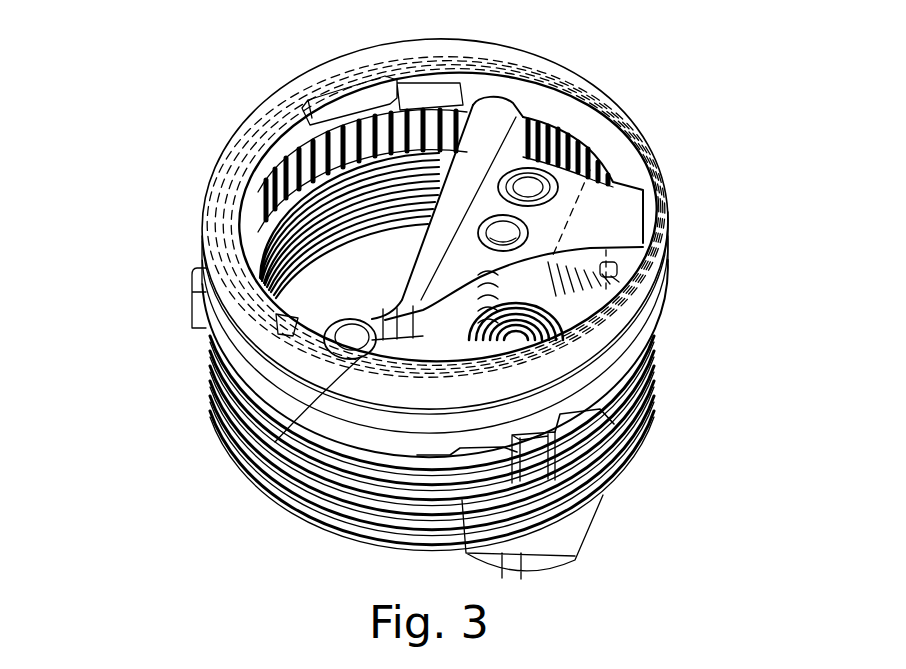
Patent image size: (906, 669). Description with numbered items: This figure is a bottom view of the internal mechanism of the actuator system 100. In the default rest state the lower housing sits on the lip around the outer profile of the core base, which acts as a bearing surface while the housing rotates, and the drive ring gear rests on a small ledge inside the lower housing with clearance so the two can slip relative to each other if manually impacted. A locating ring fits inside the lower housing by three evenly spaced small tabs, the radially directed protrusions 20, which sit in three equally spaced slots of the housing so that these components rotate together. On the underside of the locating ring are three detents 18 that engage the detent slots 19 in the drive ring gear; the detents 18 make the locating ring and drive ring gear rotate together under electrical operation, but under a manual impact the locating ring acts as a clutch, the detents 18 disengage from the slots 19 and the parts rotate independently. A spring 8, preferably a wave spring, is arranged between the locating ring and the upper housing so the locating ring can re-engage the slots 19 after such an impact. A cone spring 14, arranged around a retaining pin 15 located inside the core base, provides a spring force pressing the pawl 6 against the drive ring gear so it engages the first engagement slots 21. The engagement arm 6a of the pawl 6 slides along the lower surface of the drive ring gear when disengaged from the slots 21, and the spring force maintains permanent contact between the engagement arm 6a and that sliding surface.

The actuator system 100 is at (130, 286).
The radially directed protrusions 20 is at (186, 305).
The retaining pin 15 is at (503, 237).
The engagement arm of the pawl 6a is at (600, 213).
The first engagement slots 21 is at (662, 203).
The pawl 6 is at (470, 276).
The cone spring 14 is at (446, 452).
The detent slots 19 is at (305, 515).
The spring 8 is at (365, 540).
The detents 18 is at (577, 425).